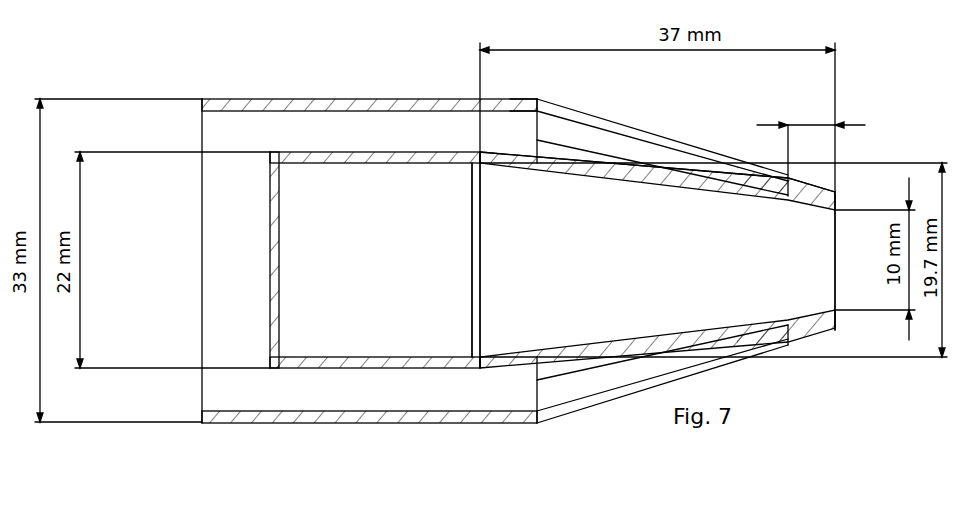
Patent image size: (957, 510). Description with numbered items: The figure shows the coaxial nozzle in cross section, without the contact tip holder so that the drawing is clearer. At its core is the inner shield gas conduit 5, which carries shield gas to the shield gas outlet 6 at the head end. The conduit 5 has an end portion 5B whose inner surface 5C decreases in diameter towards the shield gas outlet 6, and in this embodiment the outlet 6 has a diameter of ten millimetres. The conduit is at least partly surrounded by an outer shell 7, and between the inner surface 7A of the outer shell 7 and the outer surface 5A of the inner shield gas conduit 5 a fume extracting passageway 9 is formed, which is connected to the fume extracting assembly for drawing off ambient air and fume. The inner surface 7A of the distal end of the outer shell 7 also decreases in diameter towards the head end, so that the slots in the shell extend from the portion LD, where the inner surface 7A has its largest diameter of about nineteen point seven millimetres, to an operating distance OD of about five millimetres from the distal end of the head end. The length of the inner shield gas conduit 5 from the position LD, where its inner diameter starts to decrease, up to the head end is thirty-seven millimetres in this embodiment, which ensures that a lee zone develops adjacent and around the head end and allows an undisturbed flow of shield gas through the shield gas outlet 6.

The inner shield gas conduit 5 is at (313, 158).
The outer surface of the inner shield gas conduit 5A is at (615, 172).
The end portion of the inner shield gas conduit 5B is at (660, 328).
The inner surface of the end portion 5C is at (653, 183).
The shield gas outlet 6 is at (835, 255).
The outer shell 7 is at (565, 110).
The inner surface of the outer shell 7A is at (506, 109).
The fume extracting passageway 9 is at (371, 135).
The position of largest diameter LD is at (478, 157).
The operating distance OD is at (815, 124).